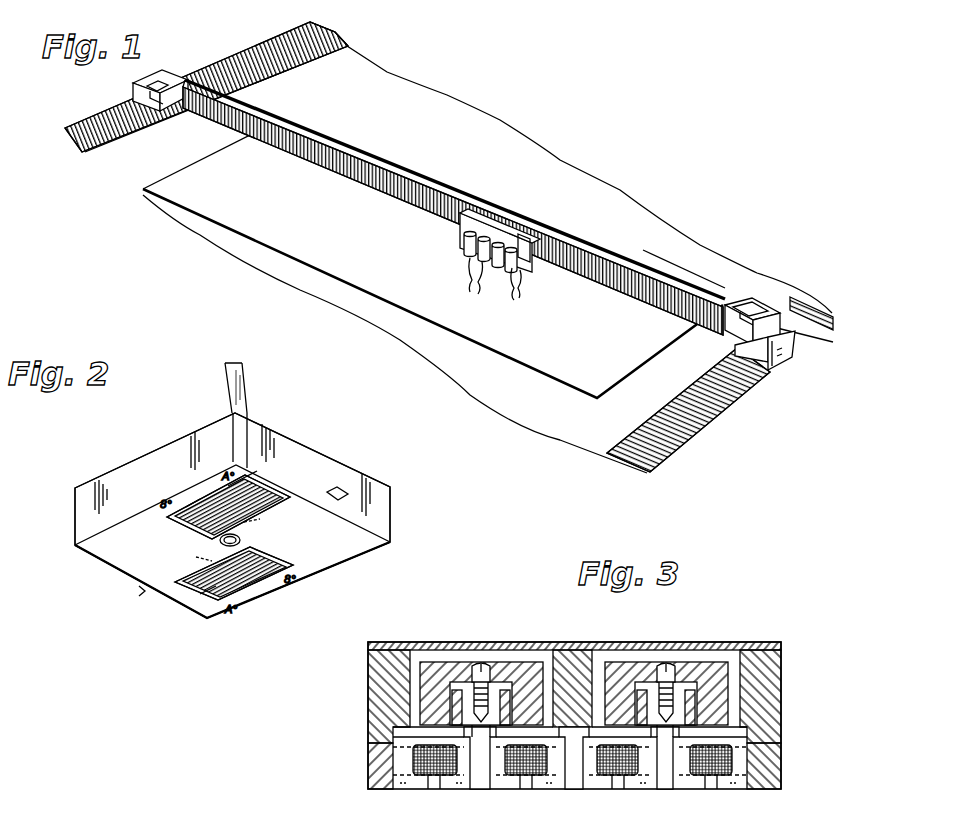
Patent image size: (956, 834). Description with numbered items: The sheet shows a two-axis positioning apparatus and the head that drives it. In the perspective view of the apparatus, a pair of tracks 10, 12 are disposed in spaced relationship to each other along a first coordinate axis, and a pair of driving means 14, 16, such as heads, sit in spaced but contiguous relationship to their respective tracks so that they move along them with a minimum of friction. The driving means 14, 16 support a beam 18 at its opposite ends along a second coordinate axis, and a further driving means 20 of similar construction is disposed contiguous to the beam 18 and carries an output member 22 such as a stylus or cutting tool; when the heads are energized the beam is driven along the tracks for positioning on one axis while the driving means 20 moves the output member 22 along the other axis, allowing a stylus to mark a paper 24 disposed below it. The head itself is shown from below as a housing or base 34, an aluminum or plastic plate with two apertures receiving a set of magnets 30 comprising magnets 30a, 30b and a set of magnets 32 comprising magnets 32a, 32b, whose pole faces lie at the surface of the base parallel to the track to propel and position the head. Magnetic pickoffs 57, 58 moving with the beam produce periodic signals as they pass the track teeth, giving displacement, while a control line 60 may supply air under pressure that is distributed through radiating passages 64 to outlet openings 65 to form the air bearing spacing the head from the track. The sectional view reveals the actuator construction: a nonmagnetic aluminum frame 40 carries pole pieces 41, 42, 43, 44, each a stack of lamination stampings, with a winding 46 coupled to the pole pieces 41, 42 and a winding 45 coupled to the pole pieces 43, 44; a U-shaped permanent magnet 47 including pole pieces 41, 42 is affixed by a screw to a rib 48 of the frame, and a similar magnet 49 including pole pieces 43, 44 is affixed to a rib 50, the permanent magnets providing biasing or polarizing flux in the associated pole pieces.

In FIG. 1, the track 10 is at (682, 425).
In FIG. 1, the track 12 is at (95, 128).
In FIG. 1, the driving means 14 is at (783, 358).
In FIG. 1, the driving means 16 is at (198, 72).
In FIG. 1, the beam 18 is at (488, 210).
In FIG. 1, the driving means 20 is at (486, 266).
In FIG. 1, the output member 22 is at (517, 280).
In FIG. 1, the paper 24 is at (560, 382).
In FIG. 3, the set of magnets 30 is at (395, 643).
In FIG. 2, the magnet 30a is at (210, 590).
In FIG. 2, the magnet 30b is at (263, 577).
In FIG. 2, the set of magnets 32 is at (277, 488).
In FIG. 2, the magnet 32a is at (230, 487).
In FIG. 2, the magnet 32b is at (188, 505).
In FIG. 2, the housing or base 34 is at (332, 553).
In FIG. 3, the housing or base 34 is at (765, 777).
In FIG. 3, the frame 40 is at (384, 664).
In FIG. 3, the pole piece 41 is at (407, 767).
In FIG. 3, the pole piece 42 is at (498, 763).
In FIG. 3, the pole piece 43 is at (590, 768).
In FIG. 3, the pole piece 44 is at (683, 765).
In FIG. 3, the winding 45 is at (618, 787).
In FIG. 3, the winding 46 is at (437, 787).
In FIG. 3, the U-shaped magnet 47 is at (437, 663).
In FIG. 3, the rib 48 is at (497, 688).
In FIG. 3, the magnet 49 is at (623, 665).
In FIG. 3, the rib 50 is at (680, 700).
In FIG. 2, the magnetic pickoff 57 is at (138, 593).
In FIG. 2, the magnetic pickoff 58 is at (343, 490).
In FIG. 2, the control line 60 is at (243, 392).
In FIG. 2, the passage 64 is at (260, 522).
In FIG. 2, the outlet opening 65 is at (243, 540).